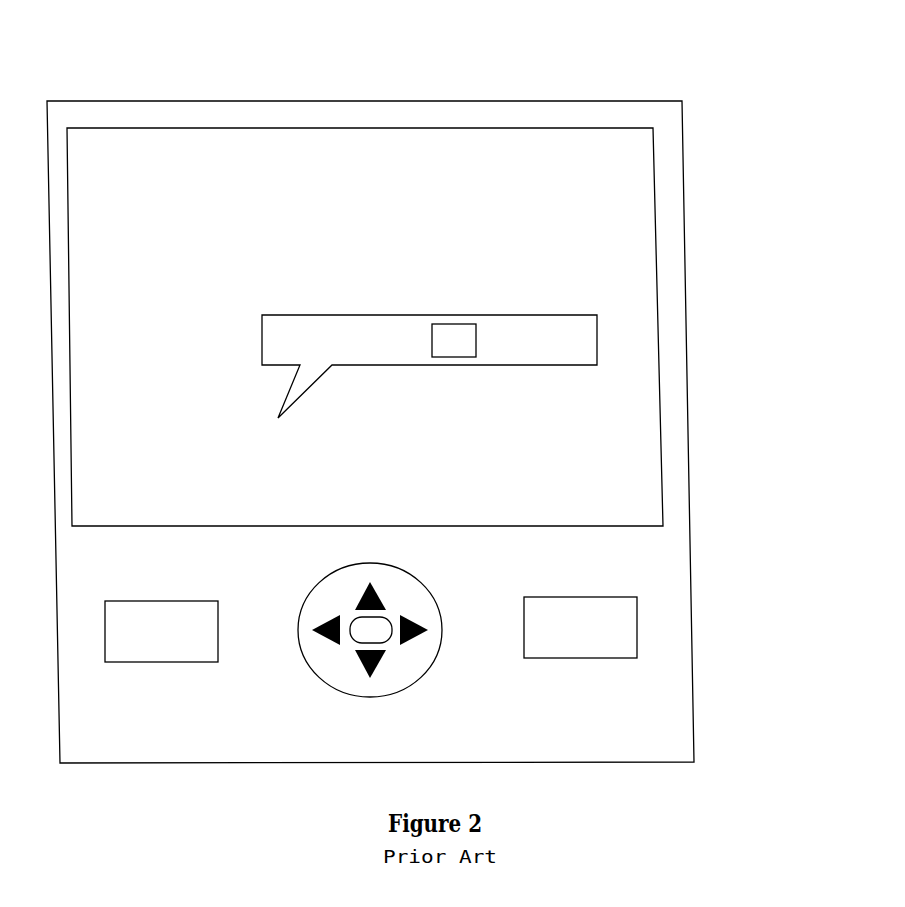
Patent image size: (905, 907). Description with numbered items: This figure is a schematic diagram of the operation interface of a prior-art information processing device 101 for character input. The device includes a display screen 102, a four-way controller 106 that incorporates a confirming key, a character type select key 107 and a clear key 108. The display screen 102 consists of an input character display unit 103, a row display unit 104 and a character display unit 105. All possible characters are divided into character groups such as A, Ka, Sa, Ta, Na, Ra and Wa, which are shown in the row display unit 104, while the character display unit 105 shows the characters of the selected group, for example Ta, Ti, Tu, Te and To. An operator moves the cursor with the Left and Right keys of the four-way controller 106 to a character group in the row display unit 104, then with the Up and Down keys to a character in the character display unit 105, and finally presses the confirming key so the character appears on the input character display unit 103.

The portable terminal housing 101 is at (454, 100).
The display screen 102 is at (627, 223).
The input character display unit 103 is at (185, 212).
The row display unit 104 is at (644, 384).
The character display unit 105 is at (500, 313).
The four-way controller 106 is at (367, 698).
The character type select key 107 is at (190, 663).
The clear key 108 is at (606, 659).